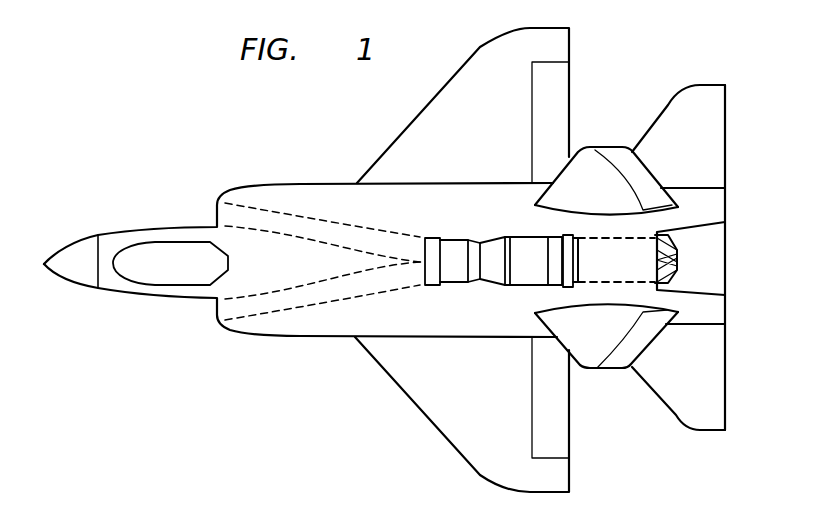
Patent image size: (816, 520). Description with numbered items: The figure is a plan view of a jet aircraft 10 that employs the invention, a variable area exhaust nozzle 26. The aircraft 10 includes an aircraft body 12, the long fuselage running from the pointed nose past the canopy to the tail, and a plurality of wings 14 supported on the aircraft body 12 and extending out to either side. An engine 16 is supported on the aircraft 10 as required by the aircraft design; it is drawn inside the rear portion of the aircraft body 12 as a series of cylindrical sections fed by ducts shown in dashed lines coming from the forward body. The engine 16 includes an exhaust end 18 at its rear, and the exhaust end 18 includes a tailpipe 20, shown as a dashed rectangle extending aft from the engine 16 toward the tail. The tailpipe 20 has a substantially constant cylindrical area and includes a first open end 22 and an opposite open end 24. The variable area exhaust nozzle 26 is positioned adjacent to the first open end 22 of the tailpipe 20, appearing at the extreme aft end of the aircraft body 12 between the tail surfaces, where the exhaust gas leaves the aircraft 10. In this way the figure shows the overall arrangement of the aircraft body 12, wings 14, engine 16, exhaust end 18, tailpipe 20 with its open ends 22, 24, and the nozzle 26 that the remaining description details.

The aircraft 10 is at (315, 125).
The aircraft body 12 is at (327, 333).
The wings 14 is at (443, 418).
The engine 16 is at (492, 245).
The exhaust end 18 is at (588, 282).
The tailpipe 20 is at (617, 282).
The first open end 22 is at (588, 238).
The opposite open end 24 is at (655, 260).
The variable area exhaust nozzle 26 is at (678, 273).